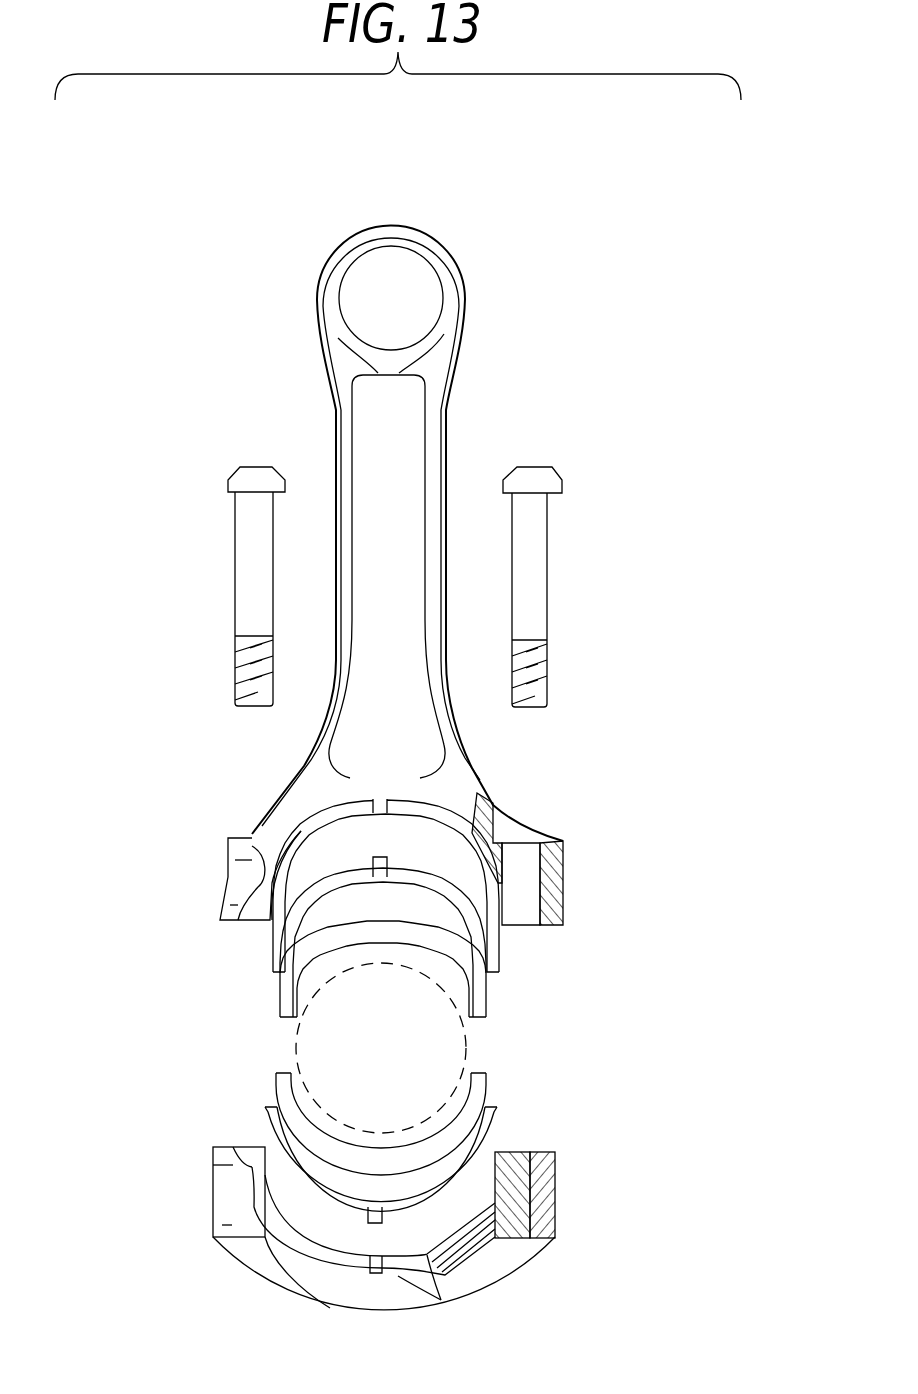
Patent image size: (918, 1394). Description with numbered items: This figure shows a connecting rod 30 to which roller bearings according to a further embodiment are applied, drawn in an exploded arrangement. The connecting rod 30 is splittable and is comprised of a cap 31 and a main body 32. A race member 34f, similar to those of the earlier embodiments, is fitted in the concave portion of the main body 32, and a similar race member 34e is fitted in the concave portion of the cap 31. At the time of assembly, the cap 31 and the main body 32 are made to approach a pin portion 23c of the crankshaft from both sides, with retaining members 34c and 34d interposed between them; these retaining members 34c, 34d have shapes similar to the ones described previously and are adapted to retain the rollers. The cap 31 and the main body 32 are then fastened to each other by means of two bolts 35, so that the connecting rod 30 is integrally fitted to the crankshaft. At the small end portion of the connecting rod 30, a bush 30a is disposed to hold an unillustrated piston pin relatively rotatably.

The connecting rod 30 is at (445, 392).
The bush 30a is at (417, 252).
The main body 32 is at (450, 784).
The cap 31 is at (497, 1266).
The bolts 35 is at (228, 480).
The race member 34f is at (500, 962).
The retaining member 34d is at (487, 1011).
The retaining member 34c is at (473, 1072).
The race member 34e is at (497, 1120).
The pin portion 23c is at (292, 1032).